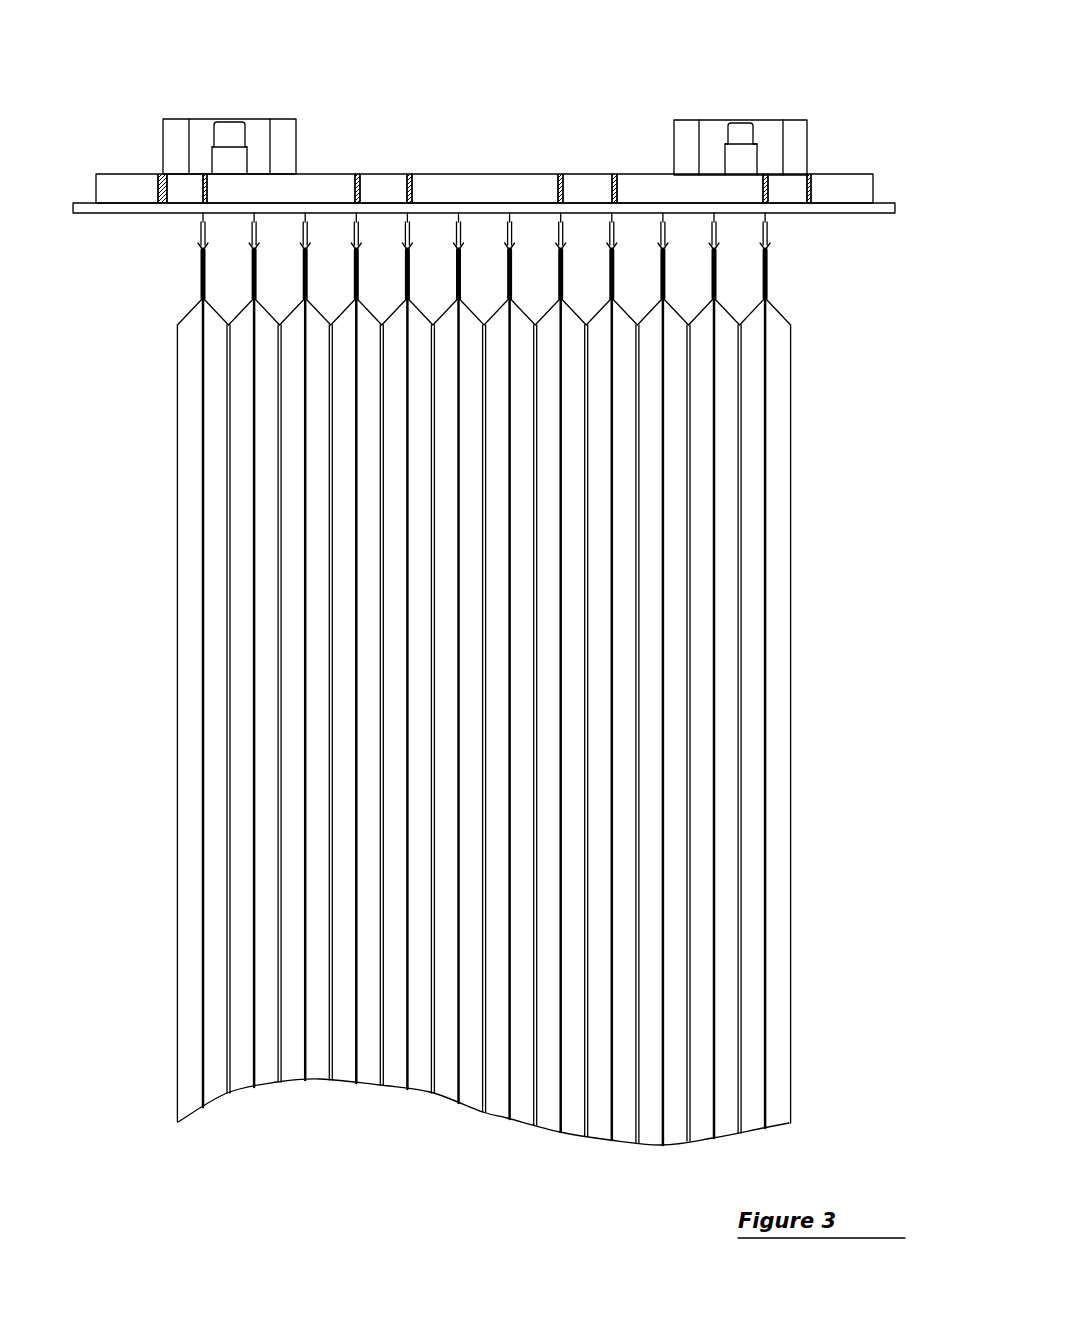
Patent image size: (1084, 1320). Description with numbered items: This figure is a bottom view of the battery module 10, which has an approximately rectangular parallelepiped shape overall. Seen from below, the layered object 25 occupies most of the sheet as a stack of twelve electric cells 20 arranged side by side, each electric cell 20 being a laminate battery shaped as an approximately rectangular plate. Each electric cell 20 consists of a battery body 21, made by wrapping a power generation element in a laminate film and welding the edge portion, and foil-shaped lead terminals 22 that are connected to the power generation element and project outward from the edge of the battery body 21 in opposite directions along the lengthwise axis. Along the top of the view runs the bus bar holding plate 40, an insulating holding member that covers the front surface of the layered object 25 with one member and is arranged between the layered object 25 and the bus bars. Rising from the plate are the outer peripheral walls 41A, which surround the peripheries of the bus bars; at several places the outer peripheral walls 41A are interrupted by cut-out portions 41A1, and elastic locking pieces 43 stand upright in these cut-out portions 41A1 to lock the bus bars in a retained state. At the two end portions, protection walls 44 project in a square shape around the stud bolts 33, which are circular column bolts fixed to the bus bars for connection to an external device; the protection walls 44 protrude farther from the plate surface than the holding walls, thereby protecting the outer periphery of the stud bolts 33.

The battery module 10 is at (797, 74).
The electric cell 20 is at (544, 679).
The battery body 21 is at (622, 392).
The lead terminals 22 is at (612, 285).
The layered object 25 is at (796, 524).
The stud bolt 33 is at (228, 120).
The bus bar holding plate 40 is at (880, 196).
The outer peripheral walls 41A is at (322, 187).
The cut-out portions 41A1 is at (358, 197).
The elastic locking pieces 43 is at (383, 188).
The protection walls 44 is at (172, 143).